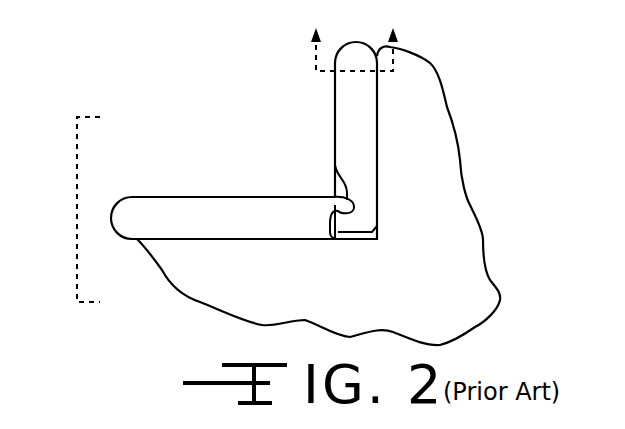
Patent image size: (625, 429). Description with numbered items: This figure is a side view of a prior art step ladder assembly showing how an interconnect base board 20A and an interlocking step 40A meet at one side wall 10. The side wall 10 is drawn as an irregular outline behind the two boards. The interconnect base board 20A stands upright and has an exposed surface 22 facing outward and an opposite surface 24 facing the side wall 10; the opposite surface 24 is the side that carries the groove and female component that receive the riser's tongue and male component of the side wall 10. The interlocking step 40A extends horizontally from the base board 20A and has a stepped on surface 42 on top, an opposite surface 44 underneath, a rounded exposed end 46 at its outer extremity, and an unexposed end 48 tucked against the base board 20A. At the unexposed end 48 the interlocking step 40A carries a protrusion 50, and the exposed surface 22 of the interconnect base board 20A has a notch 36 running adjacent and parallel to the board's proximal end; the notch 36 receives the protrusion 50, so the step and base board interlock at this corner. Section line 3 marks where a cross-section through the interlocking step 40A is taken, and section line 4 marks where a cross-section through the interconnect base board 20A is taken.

The section line 3- 3 is at (101, 211).
The section line 4- 4 is at (354, 37).
The side wall 10 is at (318, 195).
The interconnect base board 20A is at (334, 169).
The exposed surface 22 is at (335, 122).
The opposite surface 24 is at (378, 150).
The notch 36 is at (347, 188).
The interlocking step 40A is at (203, 217).
The stepped on surface 42 is at (160, 197).
The opposite surface 44 is at (258, 240).
The exposed end 46 is at (112, 215).
The unexposed end 48 is at (338, 240).
The protrusion 50 is at (337, 198).